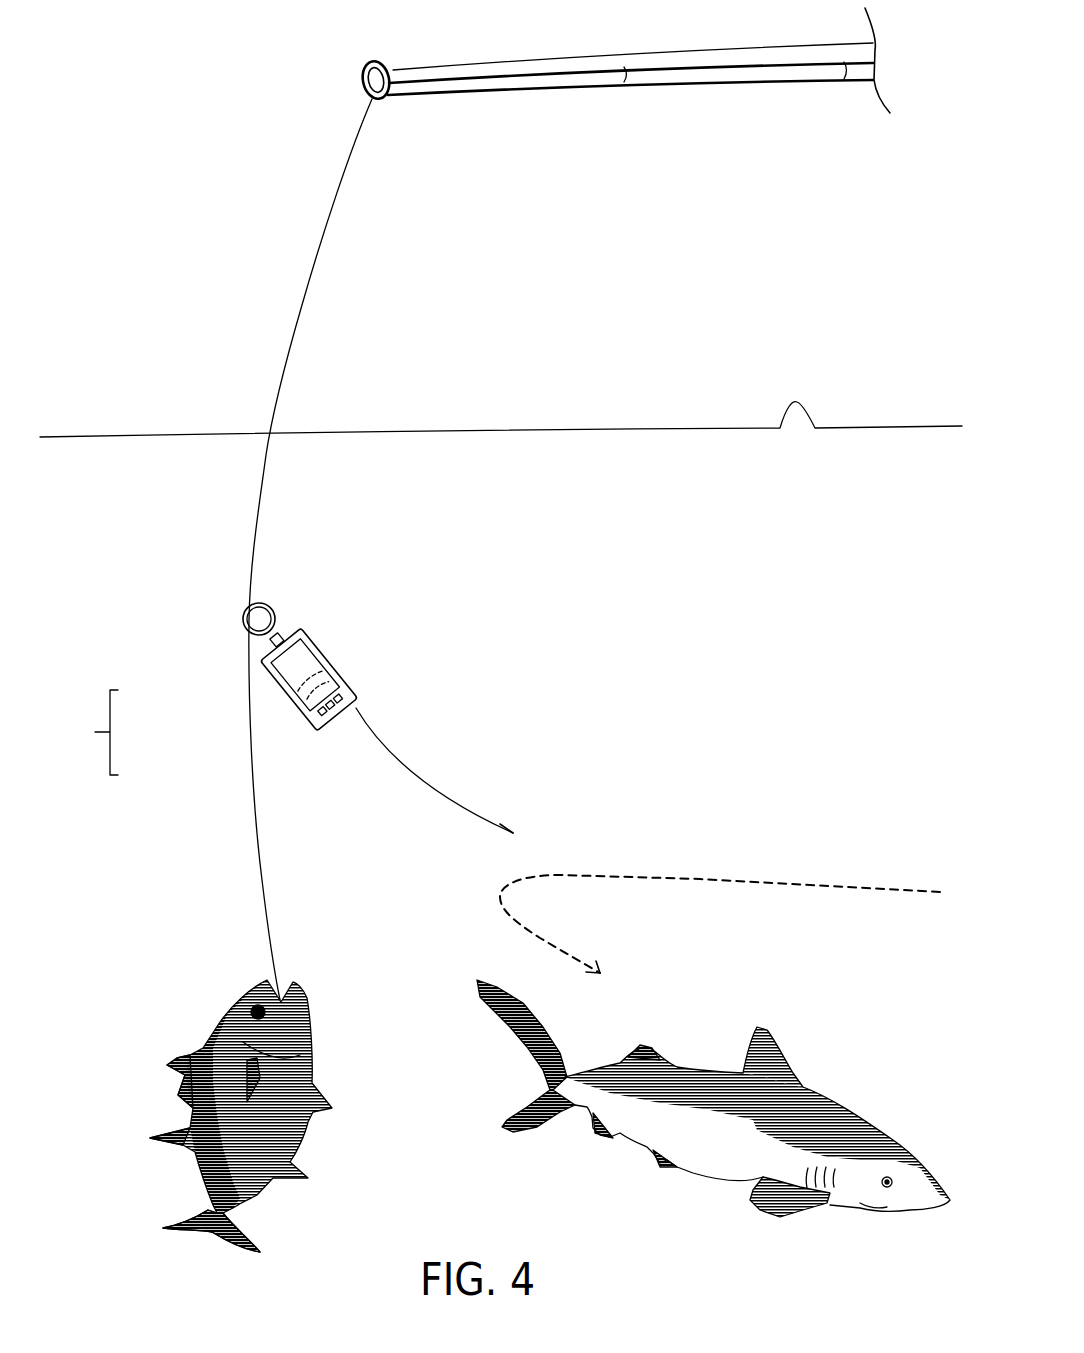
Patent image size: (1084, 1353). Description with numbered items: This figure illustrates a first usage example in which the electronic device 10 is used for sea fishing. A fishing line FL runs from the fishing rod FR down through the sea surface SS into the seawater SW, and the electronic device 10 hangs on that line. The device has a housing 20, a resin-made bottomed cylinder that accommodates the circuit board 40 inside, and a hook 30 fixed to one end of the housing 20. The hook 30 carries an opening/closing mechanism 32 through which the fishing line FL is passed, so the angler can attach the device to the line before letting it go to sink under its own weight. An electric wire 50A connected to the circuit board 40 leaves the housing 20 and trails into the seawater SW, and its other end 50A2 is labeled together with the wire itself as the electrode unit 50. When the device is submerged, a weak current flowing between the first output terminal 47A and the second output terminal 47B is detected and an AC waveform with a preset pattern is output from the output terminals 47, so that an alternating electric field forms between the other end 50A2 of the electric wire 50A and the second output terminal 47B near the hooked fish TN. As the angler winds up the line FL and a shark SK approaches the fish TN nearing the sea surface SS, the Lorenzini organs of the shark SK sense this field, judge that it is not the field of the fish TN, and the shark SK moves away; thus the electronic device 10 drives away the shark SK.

The electronic device 10 is at (323, 608).
The housing 20 is at (371, 668).
The hook 30 is at (212, 618).
The opening/closing mechanism 32 is at (245, 613).
The circuit board 40 is at (335, 660).
The output terminals 47 is at (195, 723).
The first output terminal 47A is at (300, 688).
The second output terminal 47B is at (297, 713).
The electrode unit 50 is at (494, 765).
The electric wire 50A is at (494, 765).
The other end of the electric wire 50A2 is at (513, 830).
The fishing line FL is at (318, 247).
The fishing rod FR is at (770, 73).
The sea surface SS is at (779, 429).
The seawater SW is at (828, 661).
The fish TN is at (250, 1185).
The shark SK is at (813, 1110).